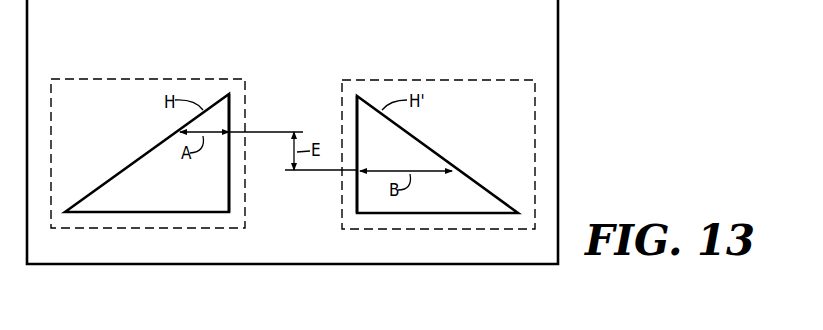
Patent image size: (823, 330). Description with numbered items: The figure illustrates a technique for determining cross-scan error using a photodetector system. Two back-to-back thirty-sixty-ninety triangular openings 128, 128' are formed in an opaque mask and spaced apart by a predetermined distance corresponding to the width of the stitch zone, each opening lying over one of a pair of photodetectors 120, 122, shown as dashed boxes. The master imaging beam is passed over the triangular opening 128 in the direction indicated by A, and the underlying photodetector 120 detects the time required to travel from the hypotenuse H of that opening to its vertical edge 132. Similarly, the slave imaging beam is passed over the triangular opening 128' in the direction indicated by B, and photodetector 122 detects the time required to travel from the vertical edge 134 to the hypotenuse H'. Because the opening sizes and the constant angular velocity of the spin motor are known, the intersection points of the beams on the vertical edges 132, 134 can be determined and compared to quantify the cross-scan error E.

The photodetector 120 is at (91, 77).
The photodetector 122 is at (497, 78).
The triangular opening 128 is at (147, 173).
The triangular opening 128' is at (437, 176).
The vertical edge 132 is at (229, 191).
The vertical edge 134 is at (355, 201).